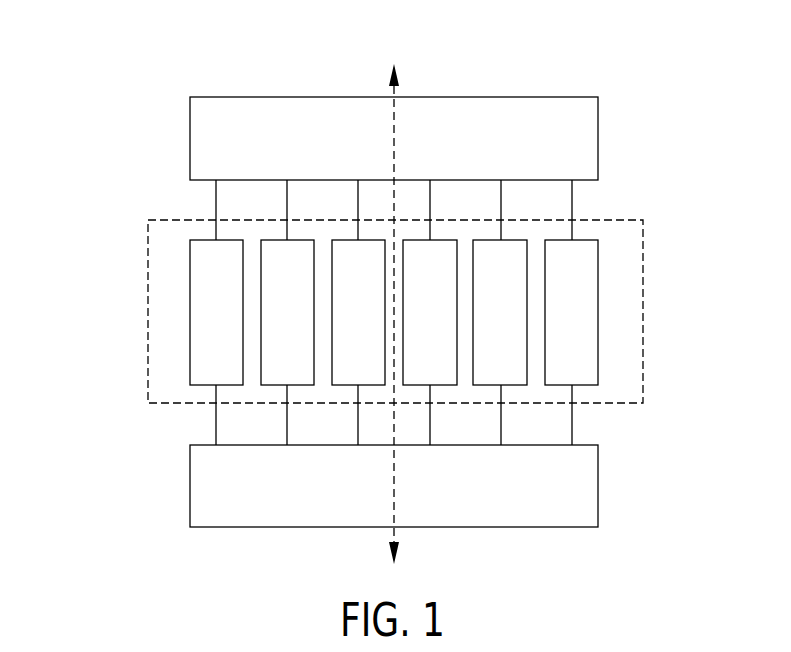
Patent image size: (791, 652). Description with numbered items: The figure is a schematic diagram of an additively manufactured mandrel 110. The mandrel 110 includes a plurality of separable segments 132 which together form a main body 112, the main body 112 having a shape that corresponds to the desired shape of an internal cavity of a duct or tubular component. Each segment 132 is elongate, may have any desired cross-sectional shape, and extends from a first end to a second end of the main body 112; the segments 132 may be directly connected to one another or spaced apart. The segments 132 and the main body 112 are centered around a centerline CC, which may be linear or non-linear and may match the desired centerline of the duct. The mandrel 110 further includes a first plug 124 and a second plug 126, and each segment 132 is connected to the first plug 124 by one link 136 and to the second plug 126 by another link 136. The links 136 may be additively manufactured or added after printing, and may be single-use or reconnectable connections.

The mandrel 110 is at (156, 83).
The main body 112 is at (644, 272).
The first plug 124 is at (598, 139).
The second plug 126 is at (492, 527).
The separable segment 132 is at (578, 356).
The link 136 is at (572, 208).